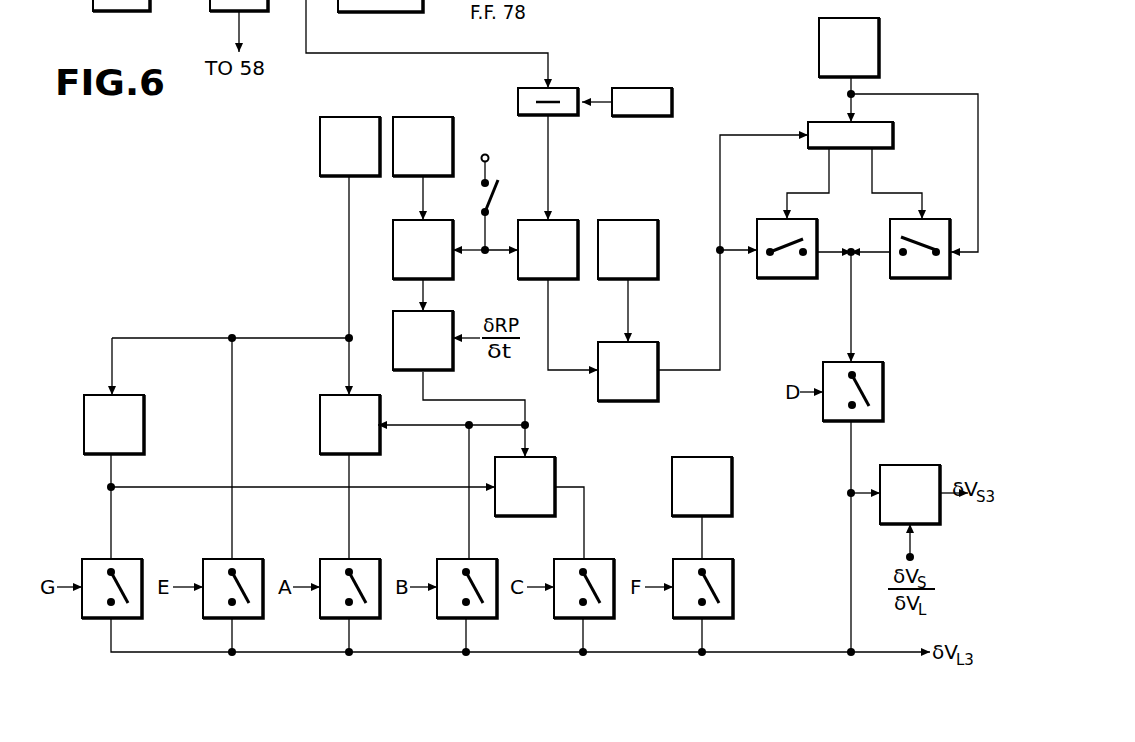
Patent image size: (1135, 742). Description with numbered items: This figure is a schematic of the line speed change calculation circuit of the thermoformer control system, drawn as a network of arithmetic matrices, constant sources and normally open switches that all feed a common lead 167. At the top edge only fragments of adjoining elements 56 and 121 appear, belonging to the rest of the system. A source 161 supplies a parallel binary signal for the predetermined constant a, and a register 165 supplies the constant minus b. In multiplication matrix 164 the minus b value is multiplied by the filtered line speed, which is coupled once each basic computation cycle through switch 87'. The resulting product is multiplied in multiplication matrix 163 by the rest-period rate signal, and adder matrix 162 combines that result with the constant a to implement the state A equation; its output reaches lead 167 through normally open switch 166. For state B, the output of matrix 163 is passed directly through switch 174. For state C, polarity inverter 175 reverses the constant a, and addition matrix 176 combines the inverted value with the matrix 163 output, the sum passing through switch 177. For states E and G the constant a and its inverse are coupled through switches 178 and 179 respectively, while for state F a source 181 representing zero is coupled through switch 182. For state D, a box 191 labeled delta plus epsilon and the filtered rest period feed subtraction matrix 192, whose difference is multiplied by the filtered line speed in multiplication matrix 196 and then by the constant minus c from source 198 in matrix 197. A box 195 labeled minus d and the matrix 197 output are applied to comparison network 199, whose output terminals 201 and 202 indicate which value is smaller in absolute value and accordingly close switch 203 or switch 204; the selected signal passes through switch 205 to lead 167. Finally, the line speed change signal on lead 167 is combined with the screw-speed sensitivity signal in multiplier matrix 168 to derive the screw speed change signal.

The block 56 is at (210, 10).
The comparator 121 is at (357, 12).
The source 161 is at (320, 147).
The adder matrix 162 is at (320, 395).
The multiplication matrix 163 is at (447, 311).
The multiplication matrix 164 is at (397, 220).
The register 165 is at (455, 133).
The normally open switch 166 is at (373, 559).
The lead 167 is at (752, 652).
The multiplier matrix 168 is at (920, 465).
The normally open switch 174 is at (480, 559).
The polarity inverter 175 is at (143, 395).
The addition matrix 176 is at (555, 457).
The normally open switch 177 is at (605, 559).
The switch 178 is at (258, 559).
The normally open switch 179 is at (136, 559).
The source 181 is at (702, 457).
The normally open switch 182 is at (725, 559).
The switch 87' is at (512, 191).
The delta plus epsilon source 191 is at (649, 88).
The subtraction matrix 192 is at (569, 88).
The constant -d source 195 is at (880, 28).
The multiplication matrix 196 is at (568, 220).
The multiplication matrix 197 is at (656, 342).
The source 198 is at (629, 220).
The comparison network 199 is at (808, 122).
The binary output terminal 201 is at (878, 150).
The binary output terminal 202 is at (826, 150).
The normally open switch 203 is at (913, 279).
The normally open switch 204 is at (797, 279).
The normally open switch 205 is at (884, 378).